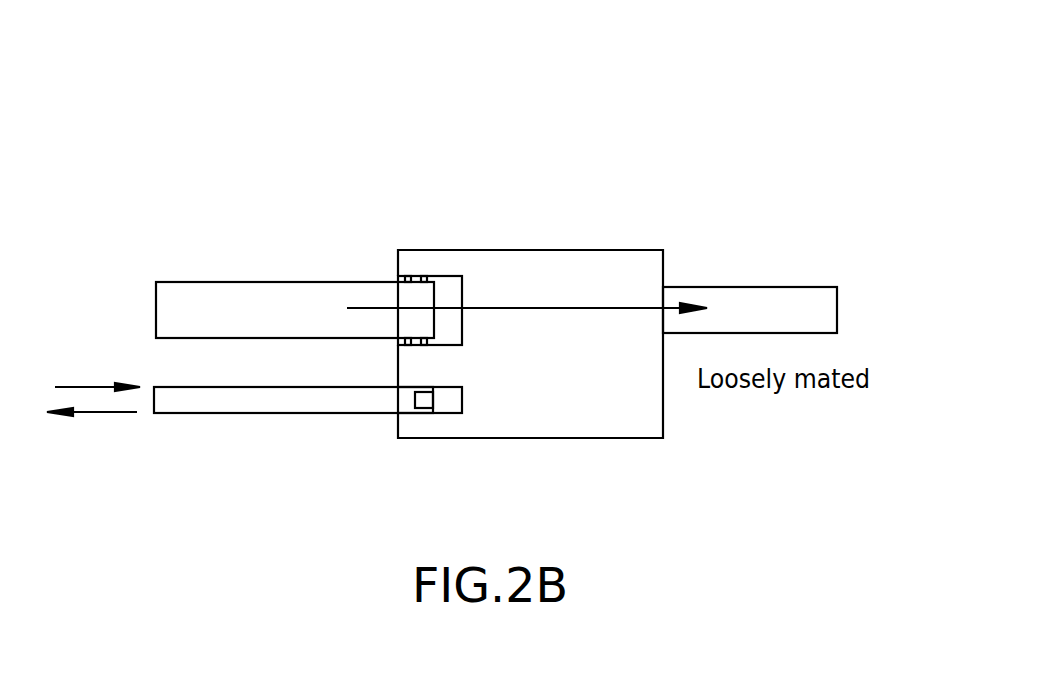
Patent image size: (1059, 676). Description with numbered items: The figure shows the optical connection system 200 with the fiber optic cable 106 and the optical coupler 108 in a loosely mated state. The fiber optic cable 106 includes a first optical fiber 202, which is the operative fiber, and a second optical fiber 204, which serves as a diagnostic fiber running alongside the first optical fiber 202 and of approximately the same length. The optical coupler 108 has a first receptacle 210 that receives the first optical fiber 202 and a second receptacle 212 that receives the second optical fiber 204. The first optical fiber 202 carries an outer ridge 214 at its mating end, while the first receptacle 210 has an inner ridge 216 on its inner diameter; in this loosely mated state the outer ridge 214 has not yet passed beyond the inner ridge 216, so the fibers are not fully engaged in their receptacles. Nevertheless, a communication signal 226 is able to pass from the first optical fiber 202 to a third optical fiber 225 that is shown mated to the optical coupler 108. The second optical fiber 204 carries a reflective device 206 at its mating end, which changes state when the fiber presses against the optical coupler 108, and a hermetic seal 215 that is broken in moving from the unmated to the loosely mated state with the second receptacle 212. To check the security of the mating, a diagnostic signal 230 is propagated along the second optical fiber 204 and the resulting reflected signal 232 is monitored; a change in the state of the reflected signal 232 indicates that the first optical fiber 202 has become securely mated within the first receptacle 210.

The optical connection system 200 is at (800, 118).
The fiber optic cable 106 is at (165, 220).
The optical coupler 108 is at (557, 250).
The first optical fiber 202 is at (282, 282).
The second optical fiber 204 is at (285, 414).
The reflective device 206 is at (433, 404).
The first receptacle 210 is at (463, 322).
The second receptacle 212 is at (460, 397).
The outer ridge 214 is at (405, 278).
The hermetic seal 215 is at (400, 407).
The inner ridge 216 is at (425, 278).
The third optical fiber 225 is at (770, 287).
The communication signal 226 is at (668, 306).
The diagnostic signal 230 is at (93, 386).
The reflected signal 232 is at (108, 412).